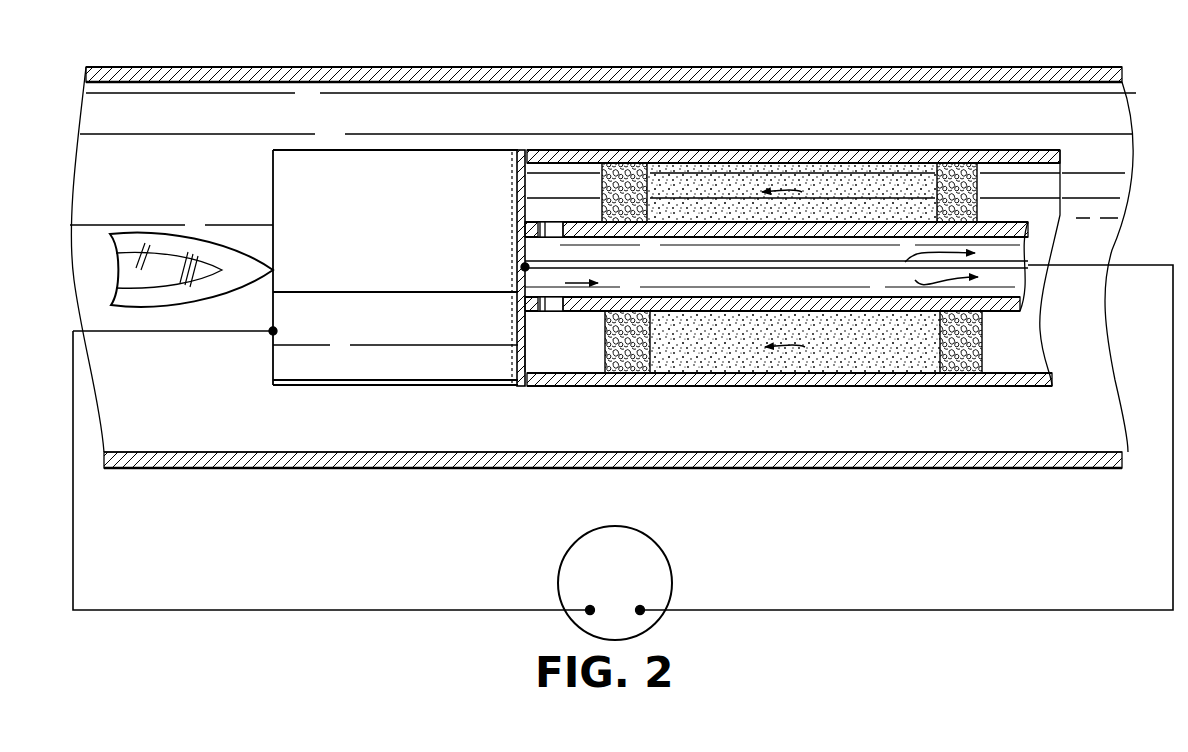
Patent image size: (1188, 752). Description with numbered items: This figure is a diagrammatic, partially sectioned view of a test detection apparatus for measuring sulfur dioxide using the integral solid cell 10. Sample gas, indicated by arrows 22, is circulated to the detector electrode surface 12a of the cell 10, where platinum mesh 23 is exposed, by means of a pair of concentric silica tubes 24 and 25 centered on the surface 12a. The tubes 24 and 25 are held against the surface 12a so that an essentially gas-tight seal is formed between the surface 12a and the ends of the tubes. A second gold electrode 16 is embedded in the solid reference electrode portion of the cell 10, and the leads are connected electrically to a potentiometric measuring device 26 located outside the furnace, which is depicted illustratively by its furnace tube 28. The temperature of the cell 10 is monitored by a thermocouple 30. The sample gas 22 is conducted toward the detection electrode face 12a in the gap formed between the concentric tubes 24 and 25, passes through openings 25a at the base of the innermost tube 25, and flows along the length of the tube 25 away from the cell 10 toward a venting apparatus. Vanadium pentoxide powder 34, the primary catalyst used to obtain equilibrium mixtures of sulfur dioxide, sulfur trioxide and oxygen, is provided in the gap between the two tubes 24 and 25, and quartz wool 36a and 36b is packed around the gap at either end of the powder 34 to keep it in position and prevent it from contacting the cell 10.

The integral solid cell 10 is at (395, 387).
The detector electrode surface 12a is at (530, 318).
The second gold electrode 16 is at (74, 490).
The sample gas 22 is at (757, 268).
The platinum mesh 23 is at (521, 150).
The outer silica tube 24 is at (830, 150).
The innermost silica tube 25 is at (745, 238).
The openings 25a is at (590, 252).
The potentiometric measuring device 26 is at (662, 549).
The furnace tube 28 is at (900, 67).
The thermocouple 30 is at (170, 237).
The vanadium pentoxide powder 34 is at (698, 204).
The quartz wool 36a is at (625, 175).
The quartz wool 36b is at (955, 165).